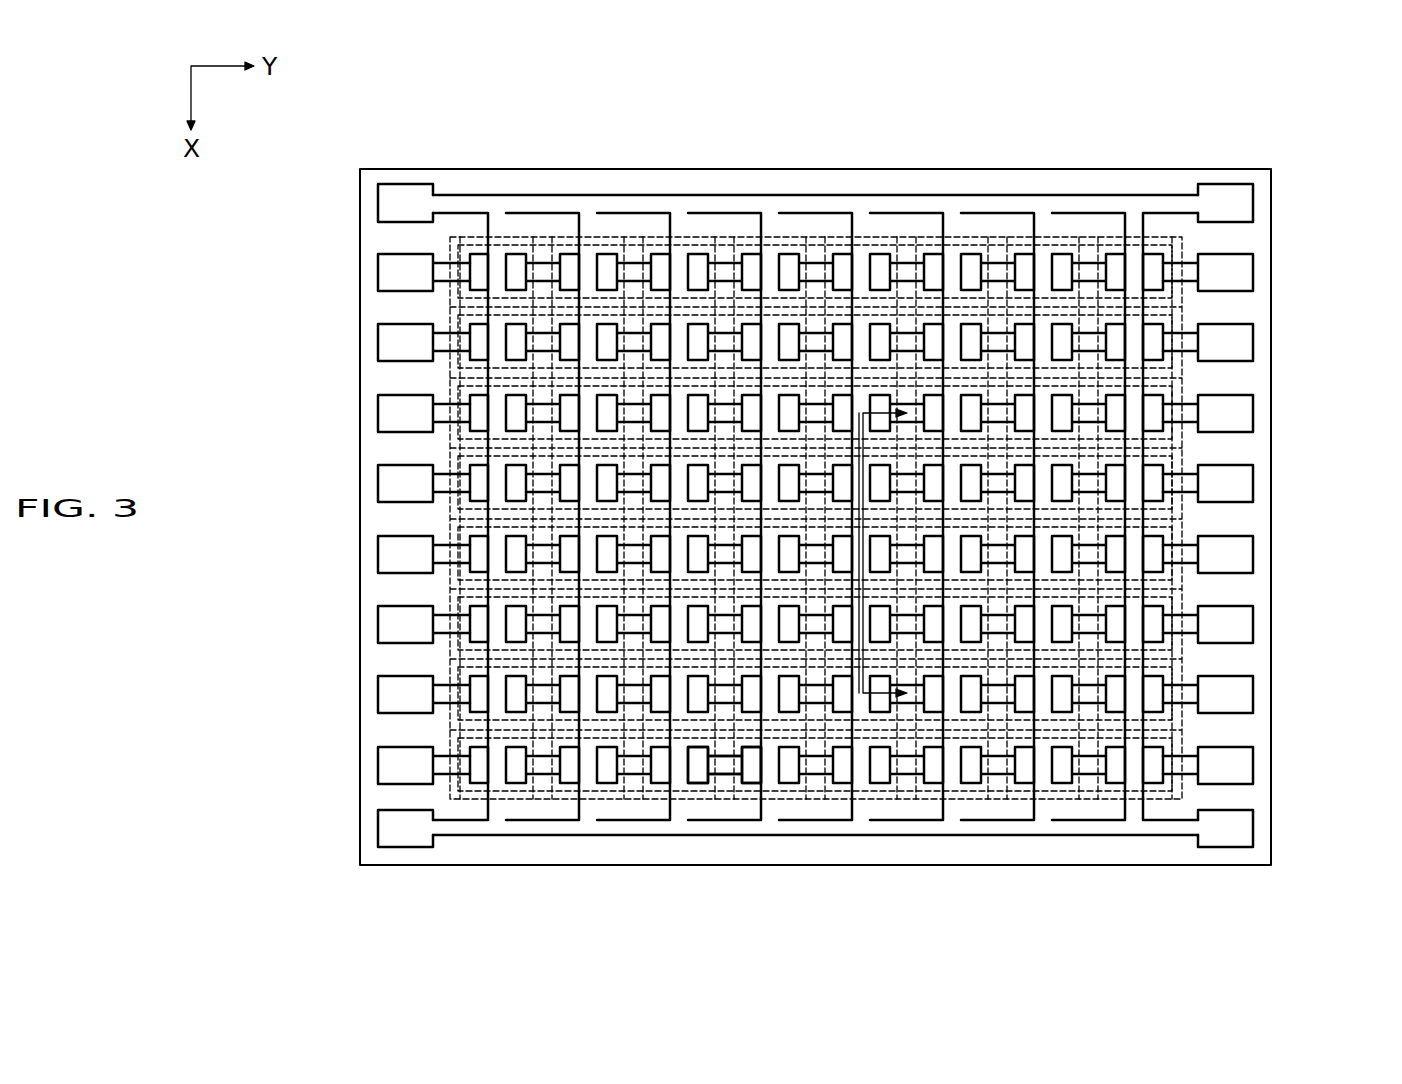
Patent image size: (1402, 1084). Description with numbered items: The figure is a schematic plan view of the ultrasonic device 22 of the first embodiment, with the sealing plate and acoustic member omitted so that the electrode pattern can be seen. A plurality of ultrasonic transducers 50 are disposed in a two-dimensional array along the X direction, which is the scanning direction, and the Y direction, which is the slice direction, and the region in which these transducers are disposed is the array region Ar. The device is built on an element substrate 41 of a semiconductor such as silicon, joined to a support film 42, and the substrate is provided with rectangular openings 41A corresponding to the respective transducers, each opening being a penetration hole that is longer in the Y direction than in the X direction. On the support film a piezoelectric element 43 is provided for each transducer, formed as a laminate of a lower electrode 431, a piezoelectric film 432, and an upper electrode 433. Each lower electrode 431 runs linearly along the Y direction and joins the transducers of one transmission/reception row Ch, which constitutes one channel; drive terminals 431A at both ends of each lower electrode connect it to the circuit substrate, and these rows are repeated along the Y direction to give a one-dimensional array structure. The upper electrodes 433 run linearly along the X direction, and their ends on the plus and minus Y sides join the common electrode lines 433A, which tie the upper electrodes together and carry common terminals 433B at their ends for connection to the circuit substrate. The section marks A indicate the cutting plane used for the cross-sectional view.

The ultrasonic device 22 is at (857, 470).
The element substrate 41 is at (857, 470).
The support film 42 is at (1258, 147).
The opening 41A is at (745, 238).
The piezoelectric element 43 is at (816, 605).
The lower electrode 431 is at (733, 778).
The piezoelectric film 432 is at (750, 764).
The upper electrode 433 is at (775, 763).
The drive terminal 431A is at (388, 345).
The common electrode line 433A is at (1070, 193).
The common terminal 433B is at (388, 203).
The ultrasonic transducer 50 is at (527, 241).
The transmission/reception row Ch is at (455, 238).
The array region Ar is at (998, 812).
The section line A- A is at (887, 551).